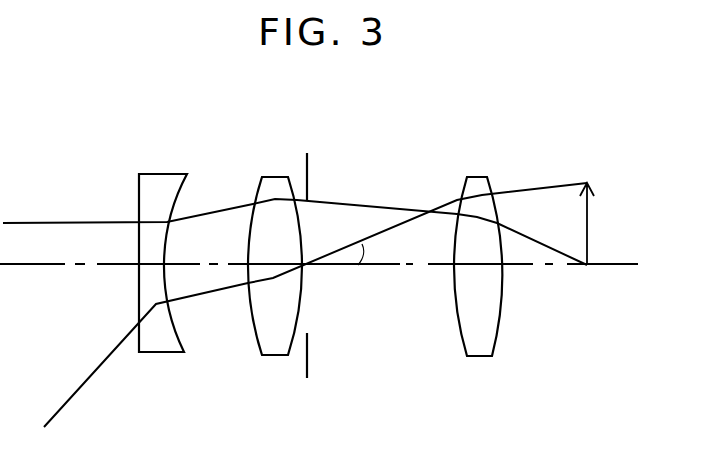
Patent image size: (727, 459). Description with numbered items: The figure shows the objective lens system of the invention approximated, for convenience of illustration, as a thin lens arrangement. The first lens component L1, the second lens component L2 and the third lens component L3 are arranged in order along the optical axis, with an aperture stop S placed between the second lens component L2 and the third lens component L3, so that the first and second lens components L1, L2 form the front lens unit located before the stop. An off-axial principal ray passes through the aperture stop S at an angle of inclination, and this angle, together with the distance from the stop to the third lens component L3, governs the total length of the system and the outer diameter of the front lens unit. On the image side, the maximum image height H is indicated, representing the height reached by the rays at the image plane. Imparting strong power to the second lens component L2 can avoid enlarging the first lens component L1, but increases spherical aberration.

The first lens component L1 is at (158, 173).
The second lens component L2 is at (267, 177).
The aperture stop S is at (310, 167).
The third lens component L3 is at (475, 176).
The maximum image height H is at (600, 223).